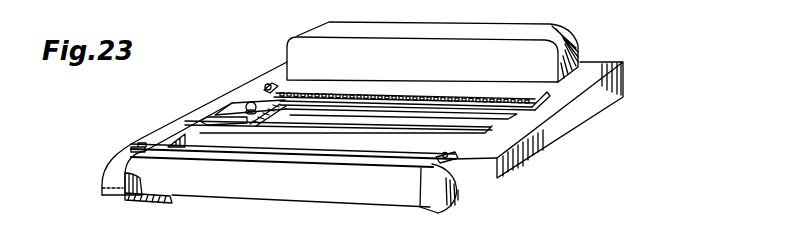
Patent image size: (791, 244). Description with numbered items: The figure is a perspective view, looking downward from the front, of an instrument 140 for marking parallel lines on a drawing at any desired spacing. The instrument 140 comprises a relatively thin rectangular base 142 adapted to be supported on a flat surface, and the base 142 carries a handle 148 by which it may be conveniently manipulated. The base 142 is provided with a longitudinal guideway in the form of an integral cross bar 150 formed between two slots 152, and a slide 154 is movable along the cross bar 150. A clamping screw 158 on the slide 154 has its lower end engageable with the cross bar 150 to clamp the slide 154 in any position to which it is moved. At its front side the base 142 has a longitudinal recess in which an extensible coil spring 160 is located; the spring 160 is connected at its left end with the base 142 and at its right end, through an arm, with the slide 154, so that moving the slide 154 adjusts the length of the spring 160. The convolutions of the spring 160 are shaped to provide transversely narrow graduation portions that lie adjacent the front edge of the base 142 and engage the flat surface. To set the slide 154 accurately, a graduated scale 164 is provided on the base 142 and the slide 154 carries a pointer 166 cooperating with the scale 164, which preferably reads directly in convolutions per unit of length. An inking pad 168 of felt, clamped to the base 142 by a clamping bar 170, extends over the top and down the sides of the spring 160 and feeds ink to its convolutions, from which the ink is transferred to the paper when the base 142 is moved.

The instrument 140 is at (162, 123).
The base 142 is at (543, 138).
The handle 148 is at (558, 27).
The cross bar 150 is at (320, 119).
The slots 152 is at (398, 111).
The slide 154 is at (227, 116).
The clamping screw 158 is at (250, 102).
The coil spring 160 is at (141, 203).
The graduated scale 164 is at (371, 99).
The pointer 166 is at (275, 93).
The inking pad 168 is at (270, 185).
The clamping bar 170 is at (281, 140).